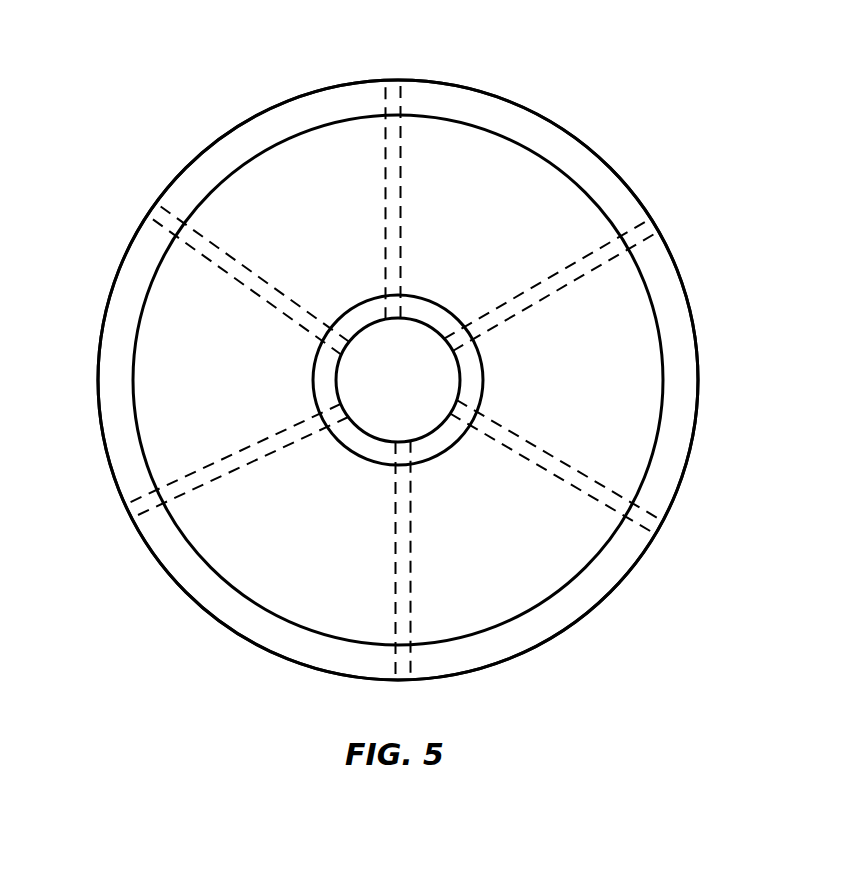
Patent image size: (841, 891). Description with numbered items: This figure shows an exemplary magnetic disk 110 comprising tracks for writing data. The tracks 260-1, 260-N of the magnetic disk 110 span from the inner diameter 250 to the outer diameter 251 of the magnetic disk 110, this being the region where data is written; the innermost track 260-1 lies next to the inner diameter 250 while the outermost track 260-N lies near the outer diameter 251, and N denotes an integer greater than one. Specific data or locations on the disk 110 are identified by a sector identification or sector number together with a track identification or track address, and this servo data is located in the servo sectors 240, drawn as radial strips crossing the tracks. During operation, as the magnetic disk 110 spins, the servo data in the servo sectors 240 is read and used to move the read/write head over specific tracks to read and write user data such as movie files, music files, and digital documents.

The magnetic disk 110 is at (148, 127).
The outer diameter 251 is at (573, 135).
The track 260-N is at (133, 387).
The track 260-1 is at (316, 407).
The inner diameter 250 is at (483, 387).
The servo sectors 240 is at (401, 88).